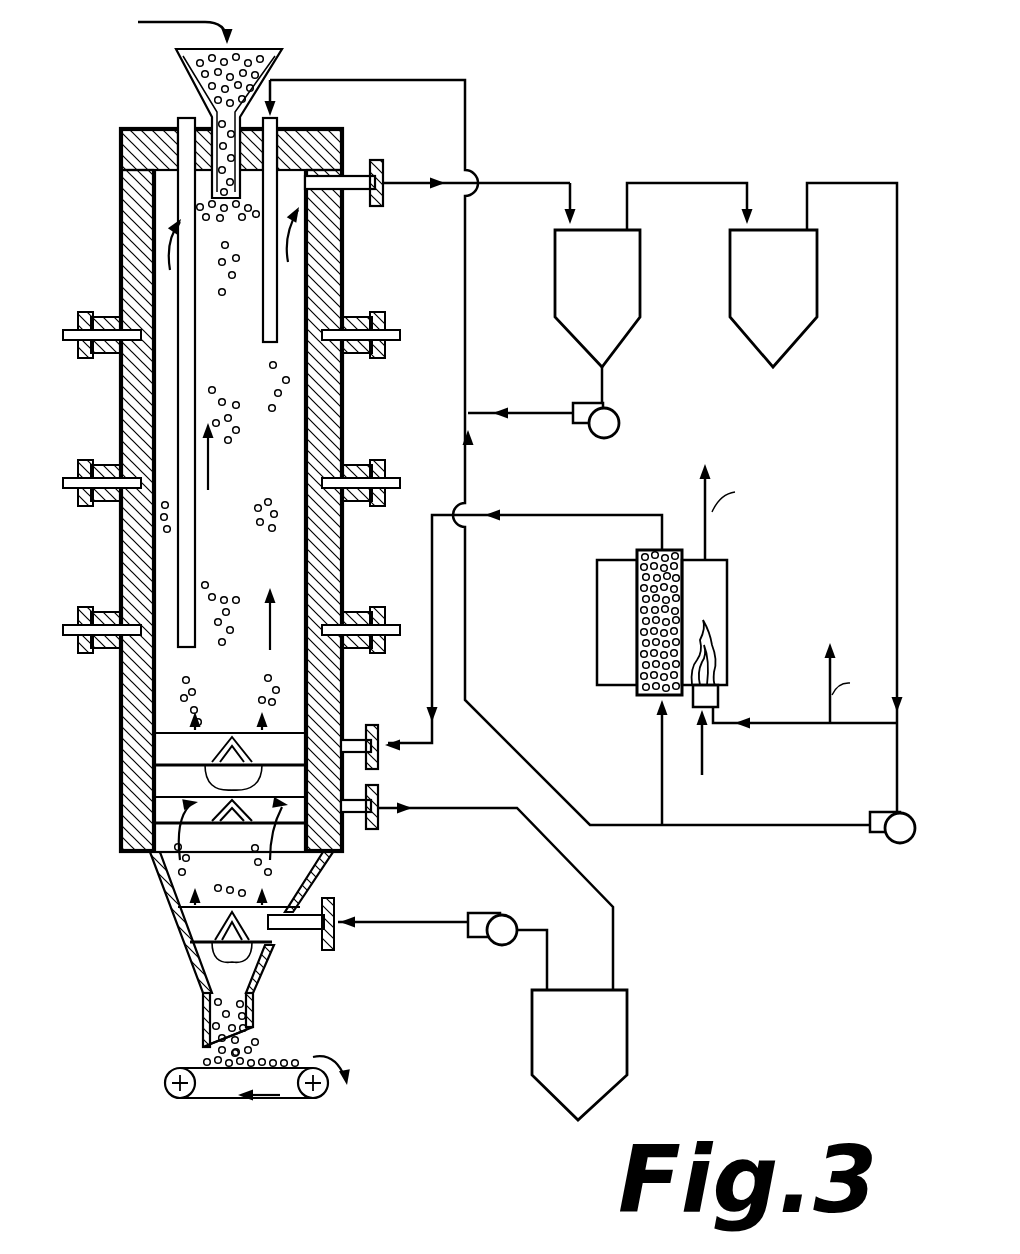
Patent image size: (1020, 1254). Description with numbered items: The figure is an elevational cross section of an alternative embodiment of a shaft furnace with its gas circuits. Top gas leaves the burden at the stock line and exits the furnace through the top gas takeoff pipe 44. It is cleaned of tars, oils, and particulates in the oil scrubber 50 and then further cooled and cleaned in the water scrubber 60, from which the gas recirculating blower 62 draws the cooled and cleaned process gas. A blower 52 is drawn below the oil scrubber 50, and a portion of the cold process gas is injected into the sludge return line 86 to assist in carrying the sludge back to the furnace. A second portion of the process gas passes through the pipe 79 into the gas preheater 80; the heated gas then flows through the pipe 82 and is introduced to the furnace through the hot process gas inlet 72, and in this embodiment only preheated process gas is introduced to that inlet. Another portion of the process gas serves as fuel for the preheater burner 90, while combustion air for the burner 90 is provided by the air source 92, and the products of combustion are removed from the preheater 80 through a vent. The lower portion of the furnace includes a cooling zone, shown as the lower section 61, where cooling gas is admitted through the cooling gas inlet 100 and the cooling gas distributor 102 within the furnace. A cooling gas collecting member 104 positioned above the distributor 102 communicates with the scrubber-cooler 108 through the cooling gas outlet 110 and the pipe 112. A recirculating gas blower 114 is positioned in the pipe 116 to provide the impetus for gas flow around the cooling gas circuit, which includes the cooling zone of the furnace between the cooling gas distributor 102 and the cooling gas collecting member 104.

The top gas takeoff pipe 44 is at (362, 168).
The oil scrubber 50 is at (622, 350).
The blower 52 is at (618, 434).
The water scrubber 60 is at (800, 352).
The lower cooling section 61 is at (308, 905).
The gas recirculating blower 62 is at (888, 848).
The hot process gas inlet 72 is at (355, 728).
The pipe 79 is at (660, 768).
The gas preheater 80 is at (732, 614).
The pipe 82 is at (582, 515).
The sludge return line 86 is at (468, 298).
The preheater burner 90 is at (727, 692).
The air source 92 is at (704, 766).
The cooling gas inlet 100 is at (332, 950).
The cooling gas distributor 102 is at (227, 905).
The cooling gas collecting member 104 is at (225, 775).
The scrubber-cooler 108 is at (632, 1030).
The cooling gas outlet 110 is at (380, 822).
The pipe 112 is at (492, 806).
The recirculating gas blower 114 is at (500, 915).
The pipe 116 is at (420, 918).